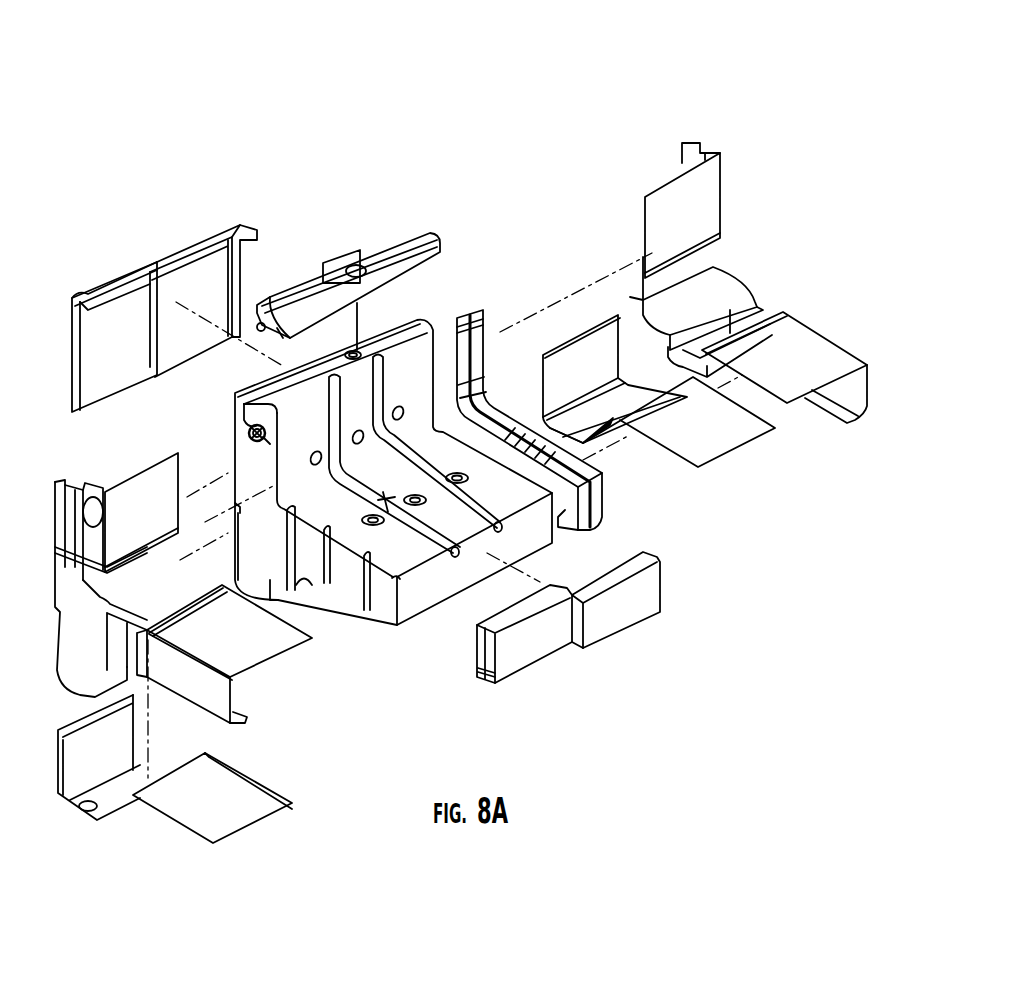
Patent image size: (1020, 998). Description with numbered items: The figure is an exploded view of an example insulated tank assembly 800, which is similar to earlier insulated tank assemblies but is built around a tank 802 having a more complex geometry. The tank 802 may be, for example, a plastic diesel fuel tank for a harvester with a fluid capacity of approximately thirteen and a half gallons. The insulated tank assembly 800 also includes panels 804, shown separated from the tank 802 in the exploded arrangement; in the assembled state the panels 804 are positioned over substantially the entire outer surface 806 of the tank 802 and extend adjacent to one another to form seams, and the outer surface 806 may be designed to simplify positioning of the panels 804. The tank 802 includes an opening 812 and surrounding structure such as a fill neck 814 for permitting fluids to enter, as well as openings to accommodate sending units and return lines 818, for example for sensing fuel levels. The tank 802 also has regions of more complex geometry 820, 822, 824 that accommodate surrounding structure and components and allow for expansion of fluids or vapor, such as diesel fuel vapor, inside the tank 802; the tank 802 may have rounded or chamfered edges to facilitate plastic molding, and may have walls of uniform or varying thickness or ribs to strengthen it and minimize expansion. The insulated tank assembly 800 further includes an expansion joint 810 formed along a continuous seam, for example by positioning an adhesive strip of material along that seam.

The insulated tank assembly 800 is at (633, 76).
The tank 802 is at (431, 623).
The panels 804 is at (668, 188).
The outer surface 806 is at (496, 568).
The expansion joint 810 is at (468, 312).
The opening 812 is at (250, 412).
The fill neck 814 is at (252, 436).
The sending units and return lines 818 is at (372, 350).
The complex geometry 820 is at (290, 388).
The complex geometry 822 is at (250, 536).
The complex geometry 824 is at (312, 588).